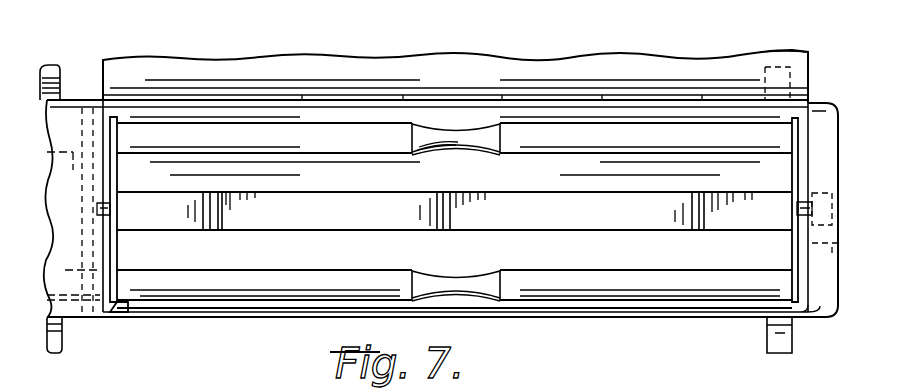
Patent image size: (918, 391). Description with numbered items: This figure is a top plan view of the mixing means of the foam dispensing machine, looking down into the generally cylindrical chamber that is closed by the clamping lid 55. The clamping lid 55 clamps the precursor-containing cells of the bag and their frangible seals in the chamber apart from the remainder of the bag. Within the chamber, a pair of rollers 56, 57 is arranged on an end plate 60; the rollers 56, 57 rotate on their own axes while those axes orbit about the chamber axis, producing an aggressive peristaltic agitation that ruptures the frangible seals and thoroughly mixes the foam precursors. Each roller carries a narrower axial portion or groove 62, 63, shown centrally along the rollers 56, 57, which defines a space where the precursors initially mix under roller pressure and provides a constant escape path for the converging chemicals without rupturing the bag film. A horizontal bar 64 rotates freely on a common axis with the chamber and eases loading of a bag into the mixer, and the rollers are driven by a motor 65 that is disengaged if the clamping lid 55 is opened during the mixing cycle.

The clamping lid 55 is at (737, 65).
The roller 56 is at (146, 135).
The roller 57 is at (180, 217).
The end plate 60 is at (123, 276).
The narrower axial portion 62 is at (490, 147).
The narrower axial portion 63 is at (486, 280).
The horizontal bar 64 is at (423, 200).
The motor 65 is at (50, 150).